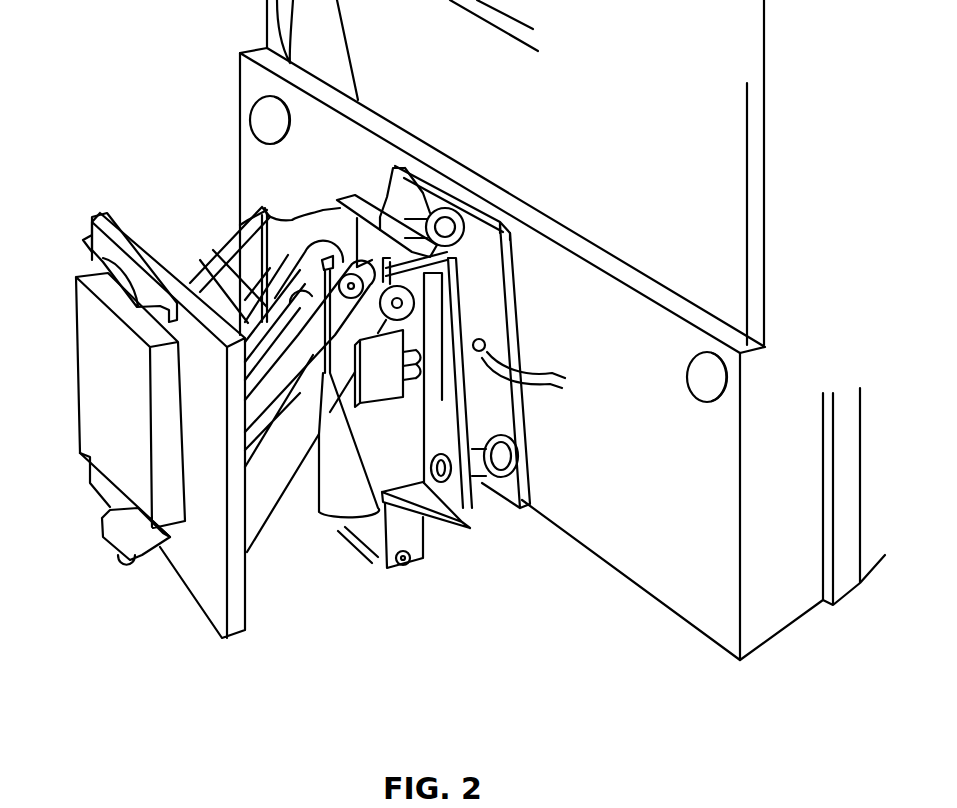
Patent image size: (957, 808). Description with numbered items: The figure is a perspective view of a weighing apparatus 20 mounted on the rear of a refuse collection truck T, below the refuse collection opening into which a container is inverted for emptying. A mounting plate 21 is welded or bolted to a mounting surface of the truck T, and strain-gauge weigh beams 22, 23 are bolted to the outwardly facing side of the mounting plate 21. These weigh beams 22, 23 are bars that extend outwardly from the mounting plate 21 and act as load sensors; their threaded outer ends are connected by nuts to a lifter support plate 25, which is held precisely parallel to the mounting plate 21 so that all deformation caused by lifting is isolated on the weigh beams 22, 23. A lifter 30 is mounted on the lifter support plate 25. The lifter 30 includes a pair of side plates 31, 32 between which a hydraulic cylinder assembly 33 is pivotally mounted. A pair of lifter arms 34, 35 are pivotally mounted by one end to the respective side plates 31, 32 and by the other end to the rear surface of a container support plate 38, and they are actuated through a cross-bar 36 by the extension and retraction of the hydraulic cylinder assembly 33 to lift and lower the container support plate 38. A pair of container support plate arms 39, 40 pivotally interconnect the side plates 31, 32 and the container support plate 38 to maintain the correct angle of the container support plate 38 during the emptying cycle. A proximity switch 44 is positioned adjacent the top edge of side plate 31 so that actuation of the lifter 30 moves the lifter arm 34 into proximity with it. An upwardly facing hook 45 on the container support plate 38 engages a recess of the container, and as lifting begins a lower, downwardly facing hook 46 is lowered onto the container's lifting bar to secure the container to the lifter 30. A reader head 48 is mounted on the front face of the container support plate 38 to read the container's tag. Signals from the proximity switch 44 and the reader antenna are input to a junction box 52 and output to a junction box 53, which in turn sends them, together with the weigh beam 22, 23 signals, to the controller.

The refuse collection truck T is at (753, 633).
The weighing apparatus 20 is at (540, 542).
The mounting plate 21 is at (545, 252).
The weigh beam 22 is at (417, 218).
The weigh beam 23 is at (483, 478).
The lifter support plate 25 is at (456, 414).
The lifter 30 is at (428, 600).
The side plate 31 is at (400, 457).
The side plate 32 is at (296, 255).
The hydraulic cylinder assembly 33 is at (347, 507).
The lifter arm 34 is at (260, 513).
The lifter arm 35 is at (240, 260).
The cross-bar 36 is at (248, 225).
The container support plate 38 is at (240, 597).
The container support plate arm 39 is at (257, 323).
The container support plate arm 40 is at (197, 283).
The proximity switch 44 is at (390, 210).
The upwardly facing hook 45 is at (83, 240).
The downwardly facing hook 46 is at (128, 565).
The reader head 48 is at (126, 418).
The junction box 52 is at (393, 372).
The junction box 53 is at (483, 327).